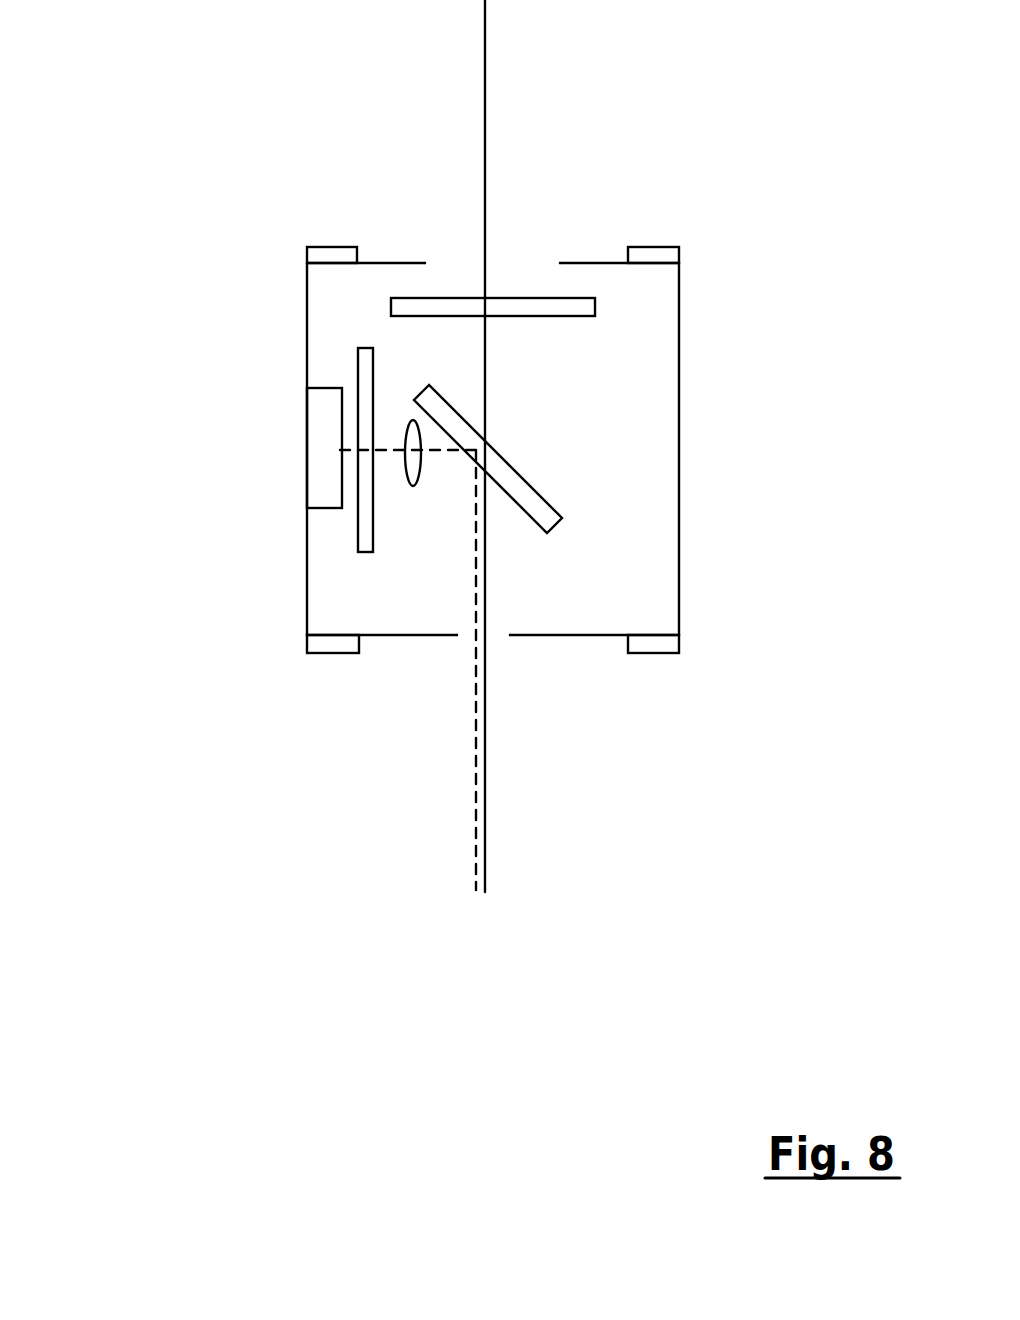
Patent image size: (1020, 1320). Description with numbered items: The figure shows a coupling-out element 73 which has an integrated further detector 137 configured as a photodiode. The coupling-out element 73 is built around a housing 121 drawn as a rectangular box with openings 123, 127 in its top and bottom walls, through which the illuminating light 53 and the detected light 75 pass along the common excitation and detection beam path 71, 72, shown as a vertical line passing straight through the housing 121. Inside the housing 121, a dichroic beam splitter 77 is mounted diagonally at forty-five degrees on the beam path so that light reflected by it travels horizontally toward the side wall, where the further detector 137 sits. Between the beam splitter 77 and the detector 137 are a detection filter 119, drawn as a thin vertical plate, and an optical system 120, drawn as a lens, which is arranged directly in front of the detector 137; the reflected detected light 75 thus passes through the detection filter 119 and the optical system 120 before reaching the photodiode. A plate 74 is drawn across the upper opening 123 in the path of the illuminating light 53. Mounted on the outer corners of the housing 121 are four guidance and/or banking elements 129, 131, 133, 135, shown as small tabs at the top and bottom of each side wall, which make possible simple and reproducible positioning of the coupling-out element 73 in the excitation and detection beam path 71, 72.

The coupling-out element 73 is at (162, 124).
The illuminating light 53 is at (587, 446).
The excitation beam path 71 is at (485, 780).
The detection beam path 72 is at (375, 670).
The detected light 75 is at (476, 773).
The window plate 74 is at (542, 300).
The dichroic beam splitter 77 is at (530, 503).
The detection filter 119 is at (355, 537).
The optical system 120 is at (410, 428).
The housing 121 is at (679, 482).
The opening 123 is at (458, 265).
The opening 127 is at (490, 637).
The guidance and/or banking element 129 is at (332, 257).
The guidance and/or banking element 131 is at (652, 257).
The guidance and/or banking element 133 is at (653, 640).
The guidance and/or banking element 135 is at (335, 647).
The further detector 137 is at (322, 488).